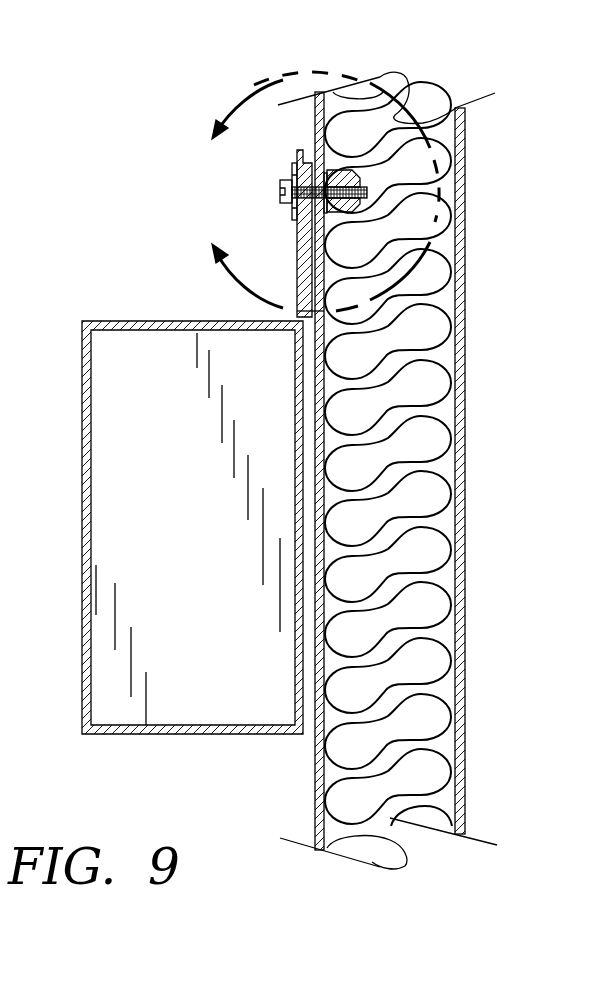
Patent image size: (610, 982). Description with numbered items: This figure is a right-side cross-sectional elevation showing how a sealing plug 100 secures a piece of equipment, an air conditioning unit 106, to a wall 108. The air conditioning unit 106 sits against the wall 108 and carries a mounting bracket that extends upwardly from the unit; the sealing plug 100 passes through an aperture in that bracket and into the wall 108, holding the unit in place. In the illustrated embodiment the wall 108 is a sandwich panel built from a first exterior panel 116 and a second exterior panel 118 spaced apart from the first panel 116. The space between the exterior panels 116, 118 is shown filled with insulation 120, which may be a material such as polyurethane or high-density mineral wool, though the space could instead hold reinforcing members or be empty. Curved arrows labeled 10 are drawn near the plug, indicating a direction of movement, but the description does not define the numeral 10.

The pivoting direction arrows 10 is at (313, 191).
The sealing plug 100 is at (240, 182).
The air conditioning unit 106 is at (197, 511).
The wall 108 is at (508, 315).
The first exterior panel 116 is at (315, 752).
The second exterior panel 118 is at (462, 693).
The insulation 120 is at (400, 460).